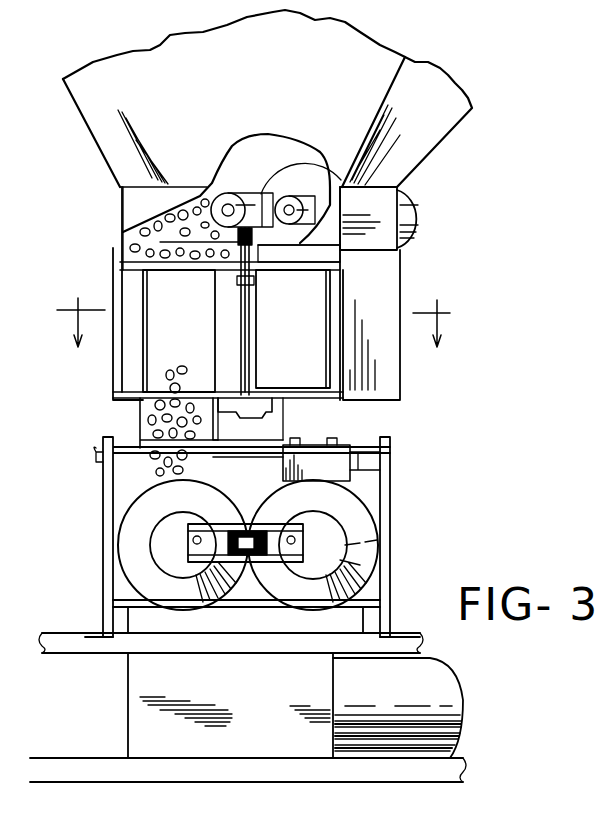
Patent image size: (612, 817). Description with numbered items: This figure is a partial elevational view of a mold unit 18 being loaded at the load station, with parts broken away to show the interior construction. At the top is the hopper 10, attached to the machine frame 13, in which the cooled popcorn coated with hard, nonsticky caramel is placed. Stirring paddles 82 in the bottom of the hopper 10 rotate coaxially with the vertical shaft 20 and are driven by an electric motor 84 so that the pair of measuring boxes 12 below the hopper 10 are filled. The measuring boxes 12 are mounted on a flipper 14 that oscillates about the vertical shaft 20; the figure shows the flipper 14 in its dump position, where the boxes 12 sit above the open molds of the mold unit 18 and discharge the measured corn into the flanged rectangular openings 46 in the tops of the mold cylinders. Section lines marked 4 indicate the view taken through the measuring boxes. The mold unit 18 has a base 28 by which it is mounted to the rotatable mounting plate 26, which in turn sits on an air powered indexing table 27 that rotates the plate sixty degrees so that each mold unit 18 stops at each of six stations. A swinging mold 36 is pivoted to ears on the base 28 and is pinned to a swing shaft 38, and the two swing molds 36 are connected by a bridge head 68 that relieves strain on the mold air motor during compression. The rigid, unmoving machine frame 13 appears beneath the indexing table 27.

The hopper 10 is at (265, 98).
The electric motor 84 is at (418, 207).
The stirring paddles 82 is at (278, 250).
The section line 4- 4 is at (255, 317).
The measuring boxes 12 is at (178, 329).
The vertical shaft 20 is at (238, 340).
The flipper 14 is at (259, 392).
The flanged rectangular opening 46 is at (146, 410).
The swing shaft 38 is at (250, 462).
The swinging mold 36 is at (150, 527).
The base 28 is at (392, 536).
The bridge head 68 is at (186, 546).
The mold unit 18 is at (70, 557).
The mounting plate 26 is at (88, 648).
The indexing table 27 is at (218, 689).
The machine frame 13 is at (468, 780).